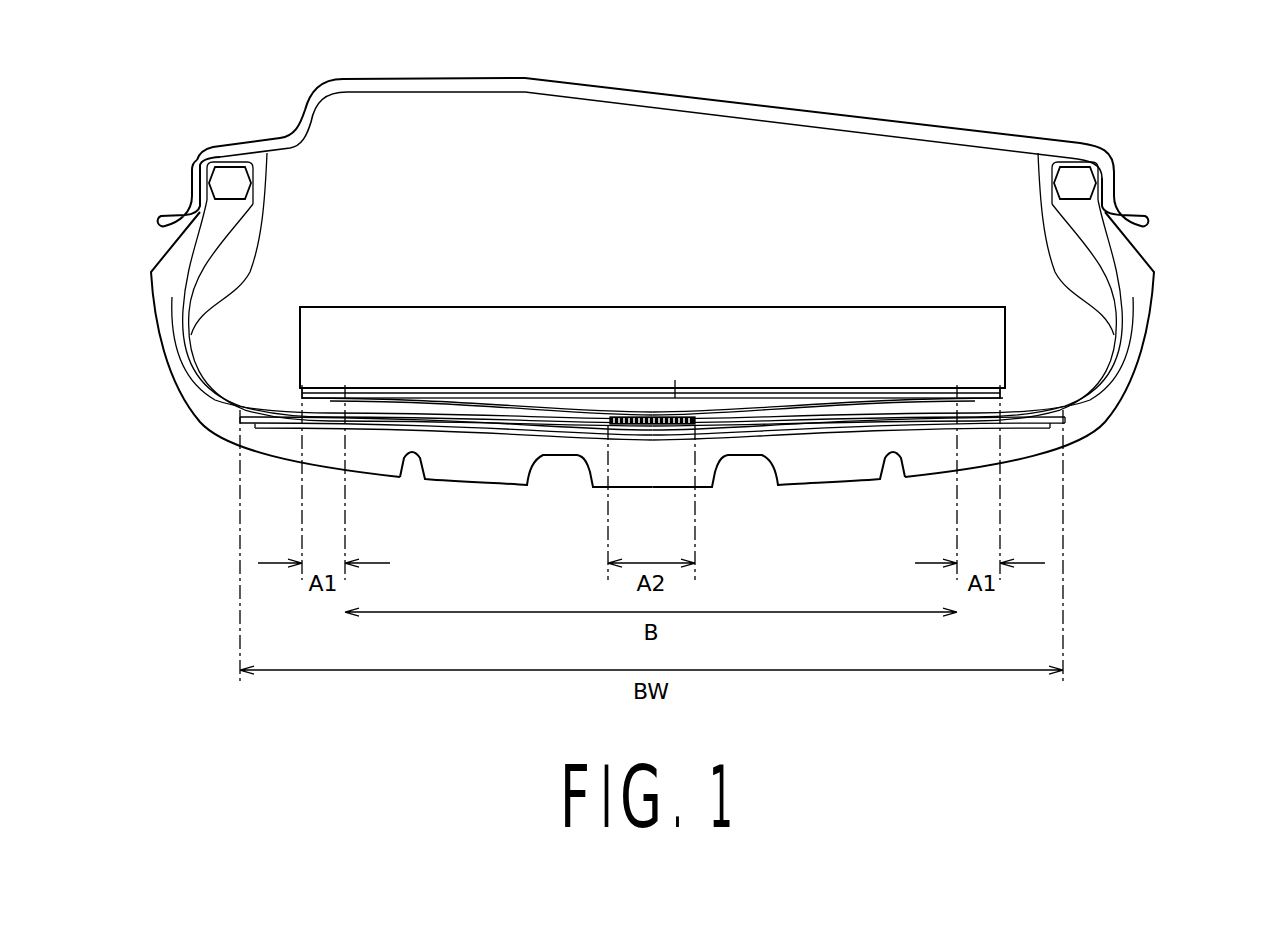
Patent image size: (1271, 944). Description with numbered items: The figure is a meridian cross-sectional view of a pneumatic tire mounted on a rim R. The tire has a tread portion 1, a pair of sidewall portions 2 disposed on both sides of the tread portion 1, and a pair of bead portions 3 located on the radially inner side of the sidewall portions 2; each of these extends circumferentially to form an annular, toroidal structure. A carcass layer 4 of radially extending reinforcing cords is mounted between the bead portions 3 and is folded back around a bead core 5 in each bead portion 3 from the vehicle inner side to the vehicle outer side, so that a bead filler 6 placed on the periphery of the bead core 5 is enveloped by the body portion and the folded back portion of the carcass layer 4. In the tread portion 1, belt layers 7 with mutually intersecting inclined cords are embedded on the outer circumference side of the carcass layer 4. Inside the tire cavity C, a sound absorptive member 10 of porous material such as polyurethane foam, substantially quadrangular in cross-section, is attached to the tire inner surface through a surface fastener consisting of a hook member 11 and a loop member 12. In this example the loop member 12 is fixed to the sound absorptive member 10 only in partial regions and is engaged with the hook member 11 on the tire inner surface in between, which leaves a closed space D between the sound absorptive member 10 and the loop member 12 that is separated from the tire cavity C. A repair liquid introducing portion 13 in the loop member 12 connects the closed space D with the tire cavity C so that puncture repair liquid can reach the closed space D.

The tread portion 1 is at (723, 508).
The sidewall portion 2 is at (147, 321).
The bead portion 3 is at (186, 182).
The carcass layer 4 is at (183, 372).
The bead core 5 is at (232, 181).
The bead filler 6 is at (220, 212).
The belt layer 7 is at (524, 440).
The sound absorptive member 10 is at (405, 315).
The hook member 11 is at (634, 426).
The loop member 12 is at (457, 398).
The repair liquid introducing portion 13 is at (785, 402).
The tire cavity C is at (619, 224).
The closed space D is at (675, 398).
The rim R is at (902, 128).